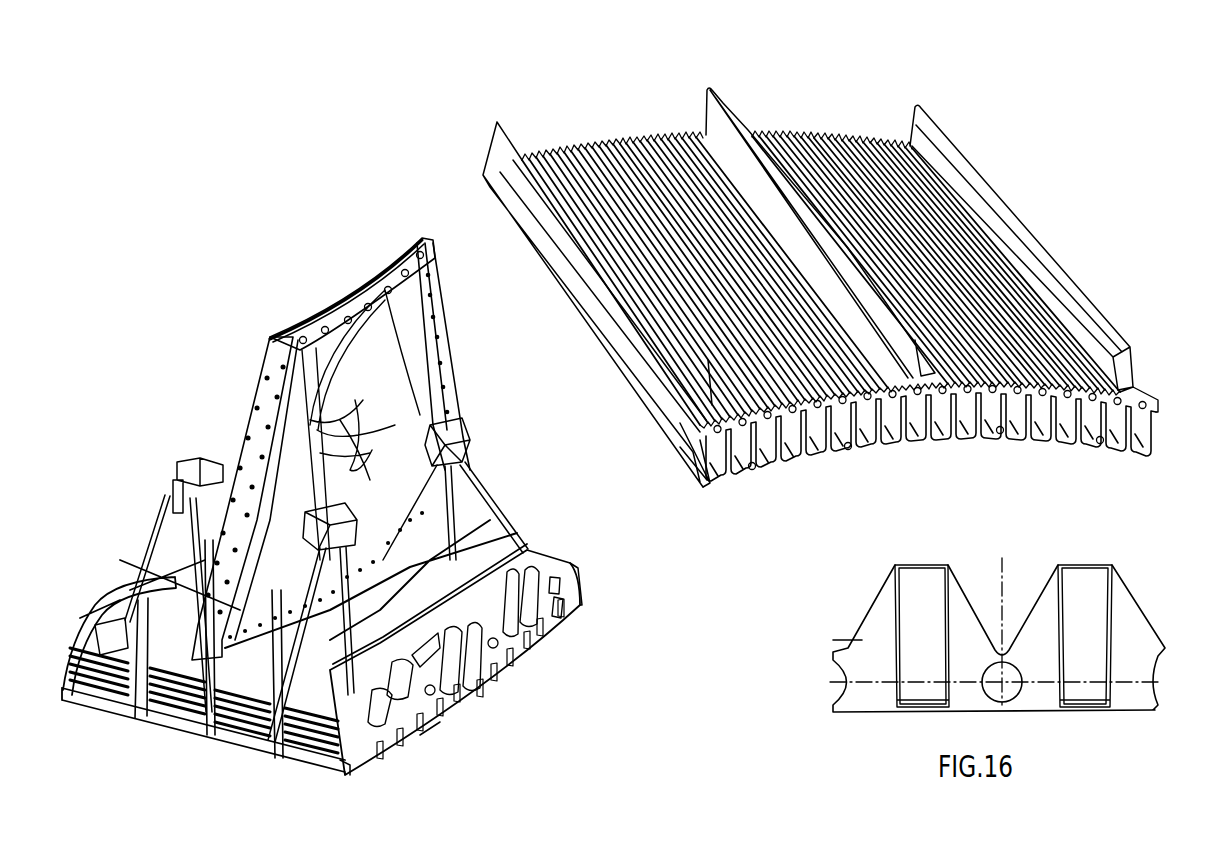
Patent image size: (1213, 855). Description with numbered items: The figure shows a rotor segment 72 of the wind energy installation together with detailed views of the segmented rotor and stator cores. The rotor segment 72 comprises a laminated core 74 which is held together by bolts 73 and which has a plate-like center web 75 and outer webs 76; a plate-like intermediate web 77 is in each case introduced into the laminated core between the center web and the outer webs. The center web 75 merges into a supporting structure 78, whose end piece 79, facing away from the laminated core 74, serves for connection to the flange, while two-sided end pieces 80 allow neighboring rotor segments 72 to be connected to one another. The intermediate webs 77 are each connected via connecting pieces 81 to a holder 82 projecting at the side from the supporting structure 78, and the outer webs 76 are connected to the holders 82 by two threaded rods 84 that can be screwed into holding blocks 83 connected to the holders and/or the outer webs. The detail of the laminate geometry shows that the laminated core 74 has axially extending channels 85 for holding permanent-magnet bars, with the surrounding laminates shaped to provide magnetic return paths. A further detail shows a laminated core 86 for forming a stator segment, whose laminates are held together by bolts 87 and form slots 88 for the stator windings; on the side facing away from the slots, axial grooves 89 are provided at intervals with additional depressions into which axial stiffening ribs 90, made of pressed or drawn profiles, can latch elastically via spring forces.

In FIG. 14, the rotor segment 72 is at (517, 497).
In FIG. 14, the bolts 73 is at (520, 660).
In FIG. 16, the bolts 73 is at (1012, 690).
In FIG. 14, the laminated core 74 is at (100, 700).
In FIG. 14, the center web 75 is at (220, 712).
In FIG. 14, the outer webs 76 is at (353, 763).
In FIG. 14, the intermediate web 77 is at (303, 693).
In FIG. 14, the supporting structure 78 is at (423, 360).
In FIG. 14, the end piece 79 is at (347, 300).
In FIG. 14, the two-sided end pieces 80 is at (253, 425).
In FIG. 14, the connecting pieces 81 is at (430, 727).
In FIG. 14, the holder 82 is at (407, 412).
In FIG. 14, the holding blocks 83 is at (463, 445).
In FIG. 14, the threaded rods 84 is at (517, 530).
In FIG. 14, the channels 85 is at (583, 594).
In FIG. 16, the channels 85 is at (1090, 620).
In FIG. 15, the laminated core 86 is at (1066, 215).
In FIG. 15, the bolts 87 is at (717, 432).
In FIG. 15, the slots 88 is at (790, 460).
In FIG. 15, the axial grooves 89 is at (625, 142).
In FIG. 15, the axial stiffening ribs 90 is at (720, 108).